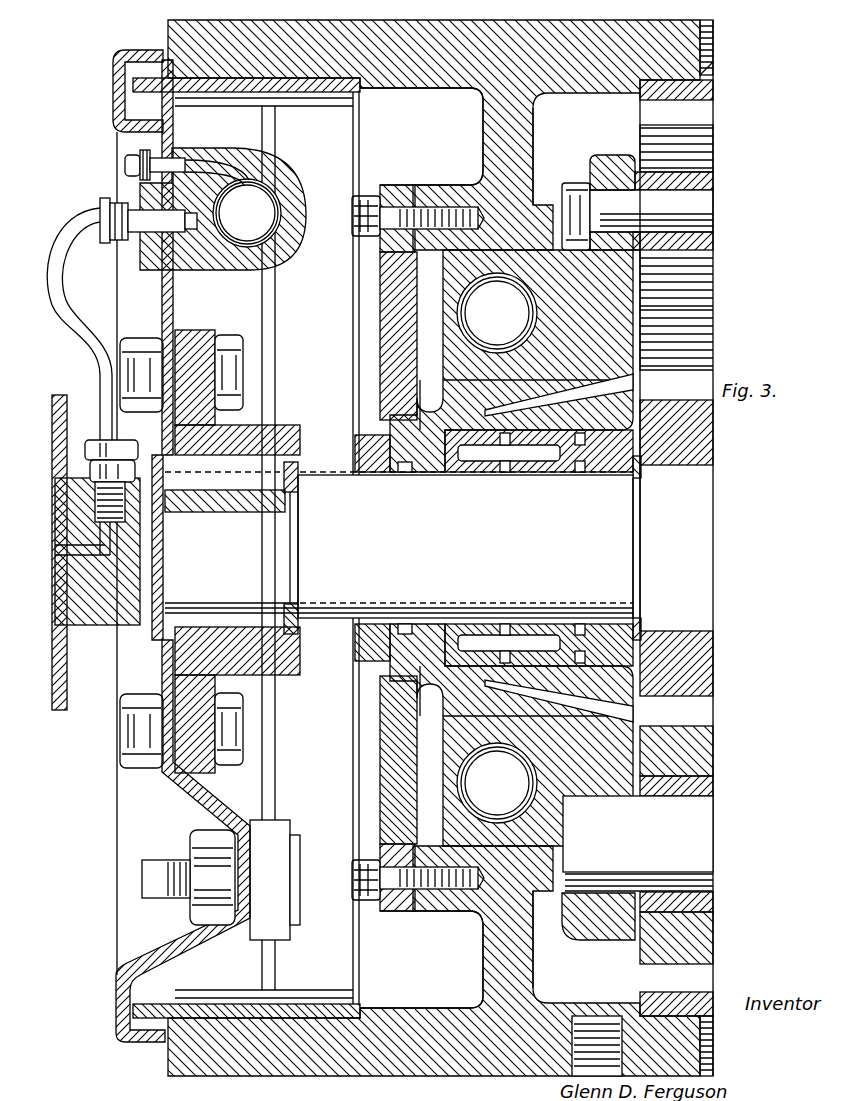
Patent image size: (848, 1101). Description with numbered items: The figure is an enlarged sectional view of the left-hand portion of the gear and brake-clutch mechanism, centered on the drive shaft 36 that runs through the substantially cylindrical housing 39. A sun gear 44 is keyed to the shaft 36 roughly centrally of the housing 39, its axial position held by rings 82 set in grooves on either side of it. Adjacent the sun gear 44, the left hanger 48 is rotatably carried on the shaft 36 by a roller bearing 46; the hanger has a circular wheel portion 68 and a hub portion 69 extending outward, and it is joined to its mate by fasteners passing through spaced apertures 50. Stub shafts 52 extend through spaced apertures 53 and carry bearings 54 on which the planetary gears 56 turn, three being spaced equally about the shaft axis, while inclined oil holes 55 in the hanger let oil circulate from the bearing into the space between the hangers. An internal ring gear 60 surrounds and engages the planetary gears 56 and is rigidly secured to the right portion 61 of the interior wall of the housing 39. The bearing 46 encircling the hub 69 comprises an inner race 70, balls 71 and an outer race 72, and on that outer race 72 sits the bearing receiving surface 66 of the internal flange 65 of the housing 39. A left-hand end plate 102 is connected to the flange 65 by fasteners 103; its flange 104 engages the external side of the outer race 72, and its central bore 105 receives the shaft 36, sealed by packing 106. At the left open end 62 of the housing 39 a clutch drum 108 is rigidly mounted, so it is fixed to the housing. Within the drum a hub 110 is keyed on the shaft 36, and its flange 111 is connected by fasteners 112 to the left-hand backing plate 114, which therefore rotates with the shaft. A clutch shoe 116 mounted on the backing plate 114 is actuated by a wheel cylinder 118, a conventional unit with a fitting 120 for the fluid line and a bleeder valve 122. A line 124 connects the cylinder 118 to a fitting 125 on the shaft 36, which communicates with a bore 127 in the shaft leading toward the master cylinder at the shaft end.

The drive shaft 36 is at (402, 548).
The housing 39 is at (428, 1080).
The sun gear 44 is at (695, 430).
The left roller bearing 46 is at (480, 630).
The left hanger 48 is at (643, 304).
The spaced apertures 50 is at (612, 168).
The stub shafts 52 is at (638, 843).
The spaced apertures 53 is at (597, 898).
The bearings 54 is at (700, 906).
The inclined oil holes 55 is at (633, 385).
The planetary gears 56 is at (705, 941).
The internal ring gear 60 is at (703, 92).
The right portion of the interior wall 61 is at (606, 97).
The left open end 62 is at (168, 1042).
The internal flange 65 is at (500, 194).
The bearing receiving surface 66 is at (522, 246).
The circular wheel portions 68 is at (650, 335).
The hub portion 69 is at (440, 695).
The inner race 70 is at (485, 352).
The balls 71 is at (497, 548).
The outer race 72 is at (445, 282).
The rings 82 is at (641, 475).
The left-hand end plate 102 is at (395, 352).
The fasteners 103 is at (355, 232).
The flange 104 is at (400, 262).
The bore 105 is at (405, 627).
The packing 106 is at (355, 455).
The clutch drum 108 is at (225, 92).
The hub 110 is at (290, 423).
The flange 111 is at (195, 332).
The fasteners 112 is at (140, 342).
The left-hand backing plate 114 is at (162, 264).
The clutch shoe 116 is at (290, 104).
The wheel cylinder 118 is at (285, 182).
The fitting 120 is at (103, 205).
The bleeder valve 122 is at (125, 165).
The line 124 is at (85, 320).
The fitting 125 is at (92, 438).
The bore 127 is at (105, 545).